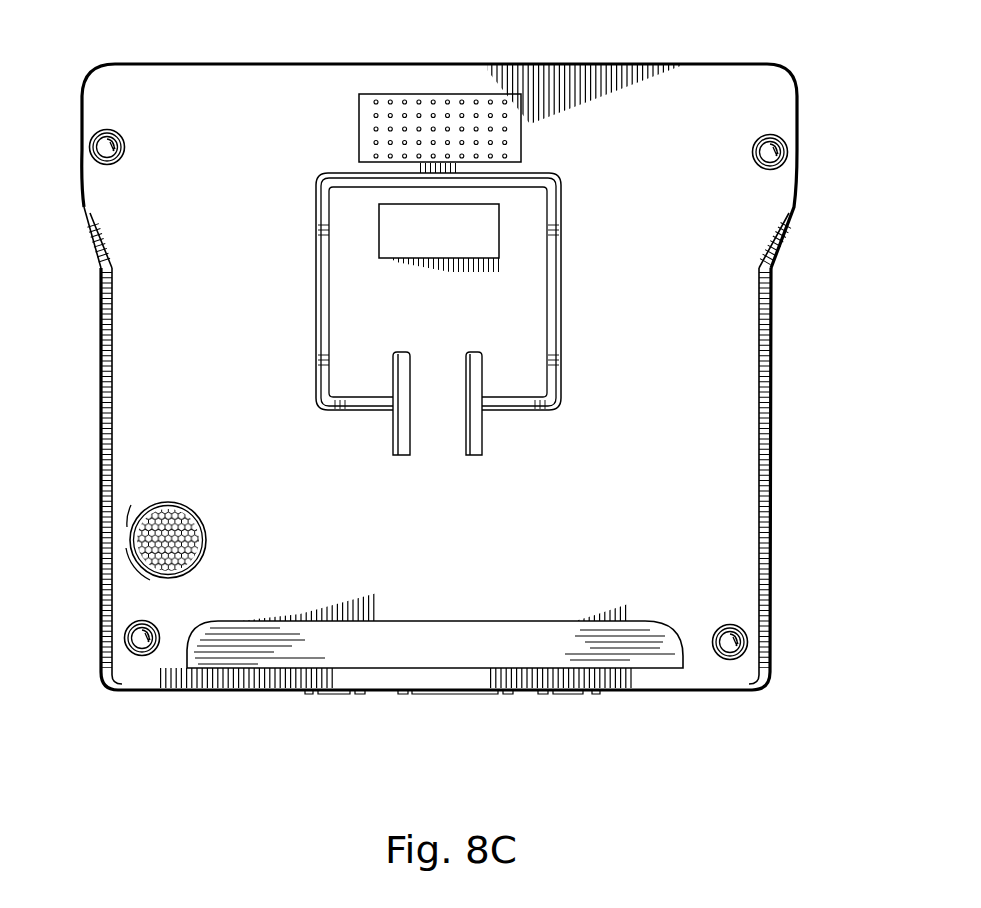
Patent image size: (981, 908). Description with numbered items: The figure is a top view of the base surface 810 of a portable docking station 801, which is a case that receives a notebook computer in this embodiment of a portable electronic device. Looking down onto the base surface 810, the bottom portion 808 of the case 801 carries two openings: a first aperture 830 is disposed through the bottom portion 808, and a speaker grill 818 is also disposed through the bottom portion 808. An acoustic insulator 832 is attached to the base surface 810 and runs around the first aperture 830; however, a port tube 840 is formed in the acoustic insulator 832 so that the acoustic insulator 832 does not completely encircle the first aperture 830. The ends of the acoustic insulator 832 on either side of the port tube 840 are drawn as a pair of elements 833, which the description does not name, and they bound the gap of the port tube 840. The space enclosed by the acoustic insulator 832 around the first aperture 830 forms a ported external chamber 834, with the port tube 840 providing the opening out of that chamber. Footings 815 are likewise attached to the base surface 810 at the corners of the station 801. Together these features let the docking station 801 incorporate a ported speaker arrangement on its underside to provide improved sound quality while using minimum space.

The portable docking station 801 is at (473, 63).
The bottom portion 808 is at (706, 482).
The base surface 810 is at (710, 259).
The footings 815 is at (96, 138).
The speaker grill 818 is at (410, 100).
The first aperture 830 is at (478, 230).
The acoustic insulator 832 is at (540, 177).
The mounting tabs 833 is at (398, 456).
The ported external chamber 834 is at (478, 315).
The port tube 840 is at (440, 418).